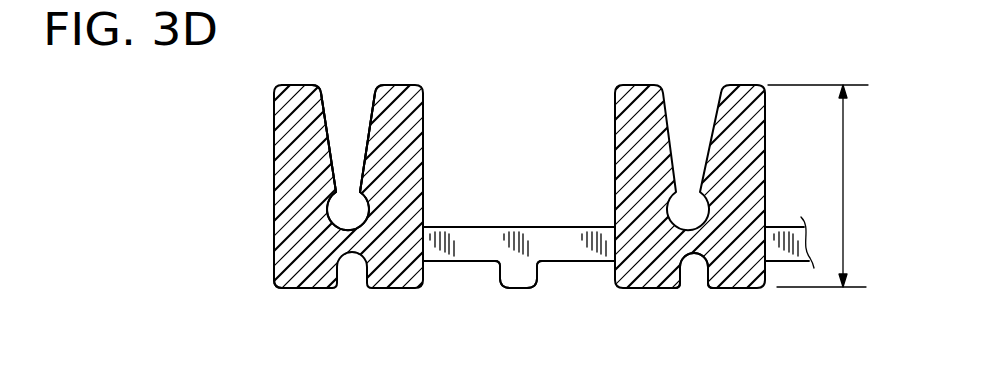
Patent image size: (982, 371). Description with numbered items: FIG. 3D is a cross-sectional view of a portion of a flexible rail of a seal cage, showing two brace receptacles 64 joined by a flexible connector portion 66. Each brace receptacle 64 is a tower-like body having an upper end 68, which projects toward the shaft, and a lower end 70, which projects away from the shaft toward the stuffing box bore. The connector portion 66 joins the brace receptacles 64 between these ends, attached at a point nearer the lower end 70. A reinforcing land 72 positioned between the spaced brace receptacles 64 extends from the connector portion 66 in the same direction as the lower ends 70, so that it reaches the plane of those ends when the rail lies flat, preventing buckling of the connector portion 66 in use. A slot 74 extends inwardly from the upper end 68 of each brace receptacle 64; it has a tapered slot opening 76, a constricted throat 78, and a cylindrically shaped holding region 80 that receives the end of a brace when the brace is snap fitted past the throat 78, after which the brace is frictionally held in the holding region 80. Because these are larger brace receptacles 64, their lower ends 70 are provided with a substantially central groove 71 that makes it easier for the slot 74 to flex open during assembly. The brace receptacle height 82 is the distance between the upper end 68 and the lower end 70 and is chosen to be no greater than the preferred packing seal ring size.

The brace receptacle 64 is at (276, 176).
The connector portion 66 is at (567, 250).
The upper end 68 is at (300, 86).
The lower end 70 is at (311, 292).
The central groove 71 is at (697, 268).
The reinforcing land 72 is at (517, 278).
The slot 74 is at (349, 88).
The tapered slot opening 76 is at (327, 97).
The constricted throat 78 is at (349, 175).
The holding region 80 is at (353, 213).
The brace receptacle height 82 is at (845, 190).